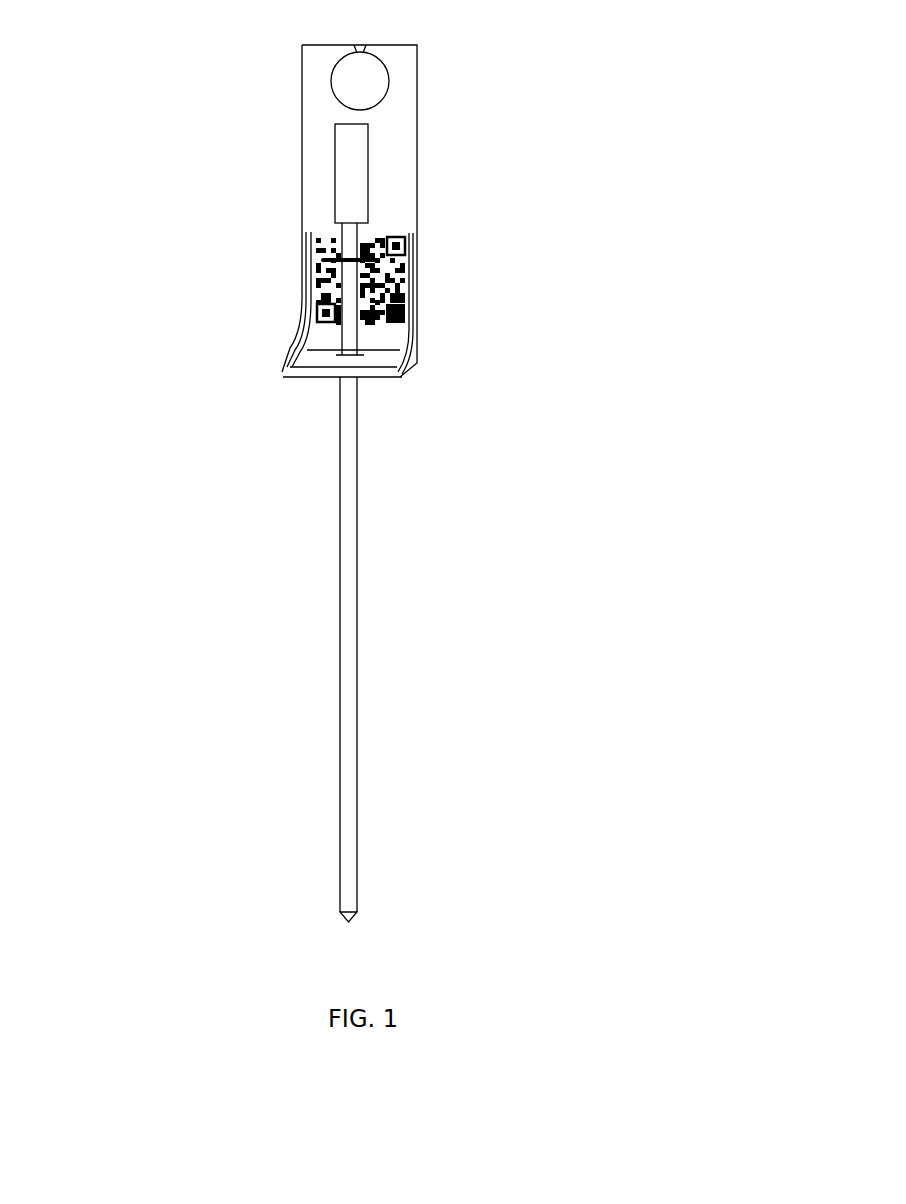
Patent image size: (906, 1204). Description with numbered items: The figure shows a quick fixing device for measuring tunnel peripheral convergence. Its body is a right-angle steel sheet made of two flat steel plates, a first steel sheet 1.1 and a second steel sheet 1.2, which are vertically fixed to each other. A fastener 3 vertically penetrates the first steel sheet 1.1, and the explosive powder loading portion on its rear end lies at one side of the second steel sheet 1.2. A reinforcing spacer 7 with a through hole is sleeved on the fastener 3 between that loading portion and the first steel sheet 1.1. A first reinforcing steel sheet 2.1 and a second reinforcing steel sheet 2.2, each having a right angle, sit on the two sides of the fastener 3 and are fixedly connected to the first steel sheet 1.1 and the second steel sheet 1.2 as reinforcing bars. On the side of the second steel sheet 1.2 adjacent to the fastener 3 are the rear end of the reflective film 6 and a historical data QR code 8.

The first steel sheet 1.1 is at (278, 375).
The second steel sheet 1.2 is at (418, 170).
The first reinforcing steel sheet 2.1 is at (278, 330).
The second reinforcing steel sheet 2.2 is at (426, 323).
The fastener 3 is at (372, 623).
The rear end of reflective film 6 is at (402, 87).
The reinforcing spacer 7 is at (292, 260).
The historical data QR code 8 is at (309, 226).